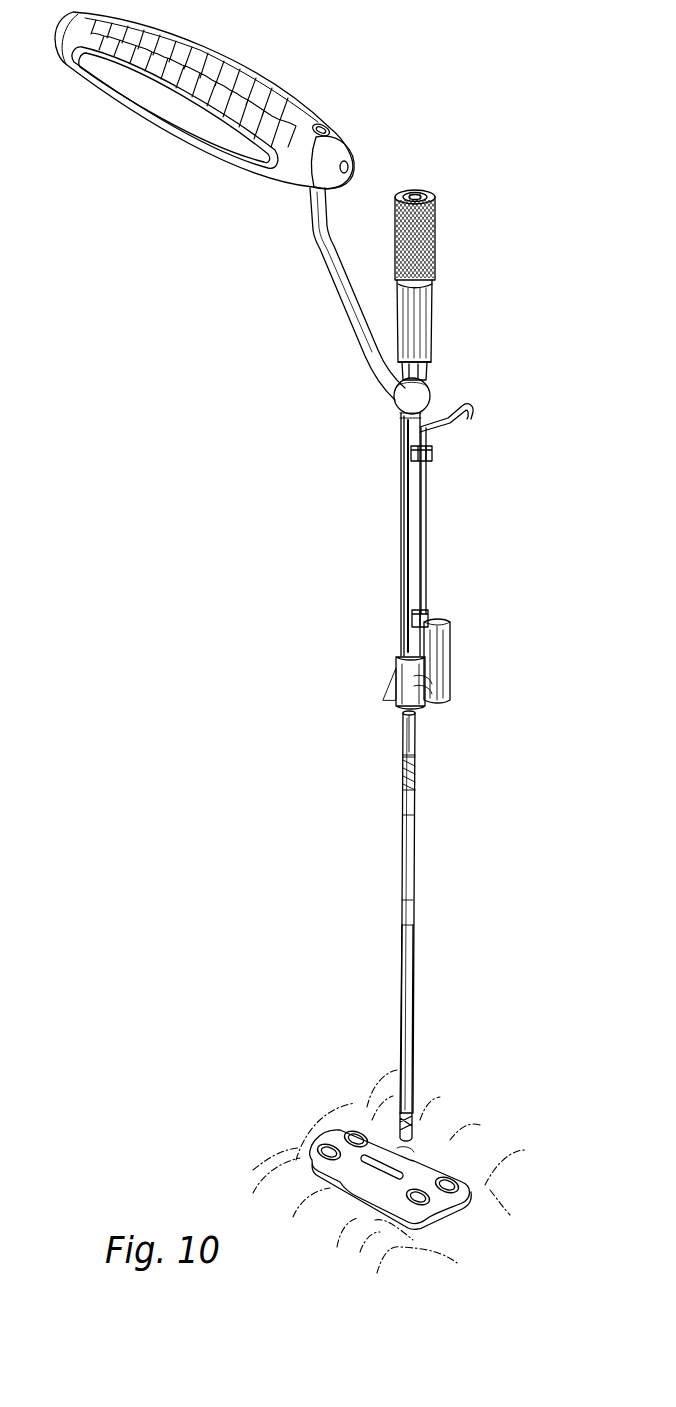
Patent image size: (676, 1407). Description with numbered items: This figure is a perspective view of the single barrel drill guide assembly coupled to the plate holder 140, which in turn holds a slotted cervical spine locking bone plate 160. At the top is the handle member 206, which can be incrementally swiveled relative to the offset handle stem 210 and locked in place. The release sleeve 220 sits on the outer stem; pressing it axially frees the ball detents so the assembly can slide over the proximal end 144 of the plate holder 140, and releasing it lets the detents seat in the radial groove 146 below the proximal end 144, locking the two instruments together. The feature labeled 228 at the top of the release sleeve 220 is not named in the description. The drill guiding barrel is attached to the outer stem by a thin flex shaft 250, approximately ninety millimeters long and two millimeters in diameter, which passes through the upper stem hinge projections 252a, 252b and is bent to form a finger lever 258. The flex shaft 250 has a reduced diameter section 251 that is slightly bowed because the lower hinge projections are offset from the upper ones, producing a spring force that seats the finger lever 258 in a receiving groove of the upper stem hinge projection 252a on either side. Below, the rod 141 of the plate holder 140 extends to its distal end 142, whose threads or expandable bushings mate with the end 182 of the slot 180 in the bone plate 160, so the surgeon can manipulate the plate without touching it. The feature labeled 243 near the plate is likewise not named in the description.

The handle member 206 is at (278, 76).
The offset handle stem 210 is at (338, 302).
The release sleeve 220 is at (444, 234).
The socket 228 is at (410, 186).
The flex shaft 250 is at (424, 512).
The reduced diameter section 251 is at (438, 614).
The upper stem hinge projection 252a is at (434, 450).
The upper stem hinge projection 252b is at (410, 617).
The flex shaft finger lever 258 is at (456, 402).
The plate holder 140 is at (455, 901).
The rod 141 is at (416, 1018).
The distal end 142 is at (392, 1130).
The proximal end 144 is at (434, 736).
The radial groove 146 is at (426, 796).
The bone plate 160 is at (362, 1200).
The slot 180 is at (399, 1162).
The end of slot 182 is at (356, 1158).
The hole 243 is at (396, 1145).